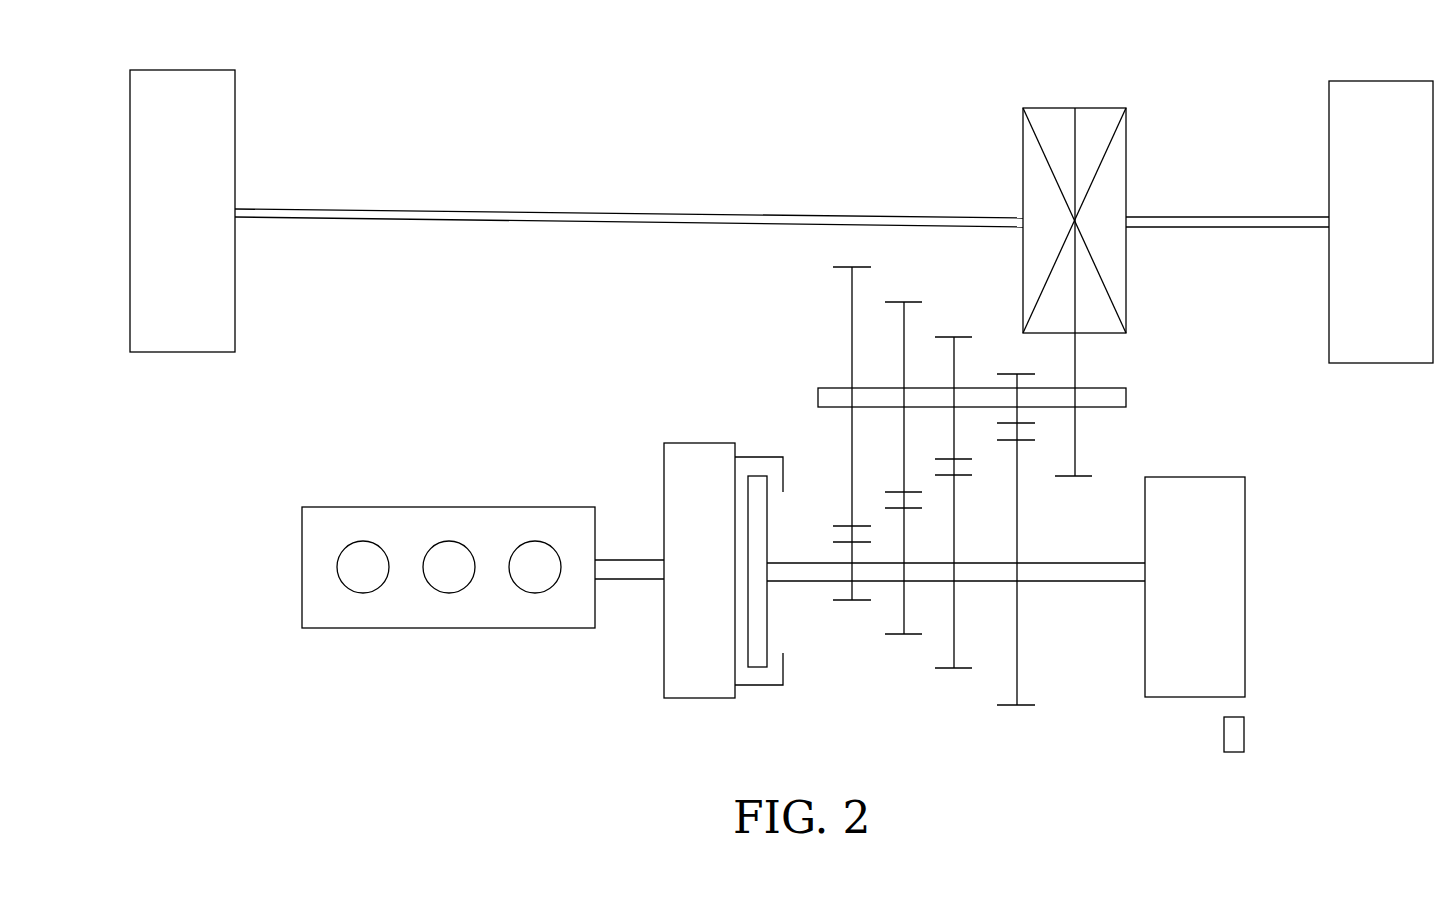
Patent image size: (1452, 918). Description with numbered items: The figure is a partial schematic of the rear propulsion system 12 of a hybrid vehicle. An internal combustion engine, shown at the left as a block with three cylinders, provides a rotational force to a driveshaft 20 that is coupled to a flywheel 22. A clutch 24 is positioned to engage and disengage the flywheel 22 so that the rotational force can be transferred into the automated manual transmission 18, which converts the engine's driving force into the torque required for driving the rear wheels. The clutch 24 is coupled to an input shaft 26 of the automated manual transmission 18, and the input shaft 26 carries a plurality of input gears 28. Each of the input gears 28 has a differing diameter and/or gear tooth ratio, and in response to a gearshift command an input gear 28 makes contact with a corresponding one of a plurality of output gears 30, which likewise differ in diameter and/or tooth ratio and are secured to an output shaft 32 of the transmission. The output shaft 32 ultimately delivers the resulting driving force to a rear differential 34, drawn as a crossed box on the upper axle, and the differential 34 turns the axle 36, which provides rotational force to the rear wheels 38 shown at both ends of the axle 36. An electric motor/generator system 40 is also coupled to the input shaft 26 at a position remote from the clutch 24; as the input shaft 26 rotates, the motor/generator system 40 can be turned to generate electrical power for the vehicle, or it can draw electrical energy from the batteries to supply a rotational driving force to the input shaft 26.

The rear propulsion system 12 is at (333, 608).
The automated manual transmission 18 is at (1115, 466).
The driveshaft 20 is at (638, 570).
The flywheel 22 is at (697, 465).
The clutch 24 is at (775, 657).
The input shaft 26 is at (1085, 573).
The input gears 28 is at (852, 590).
The output gears 30 is at (852, 297).
The output shaft 32 is at (1118, 400).
The rear differential 34 is at (1128, 143).
The axle 36 is at (412, 207).
The rear wheels 38 is at (210, 317).
The electric motor/generator system 40 is at (1225, 488).